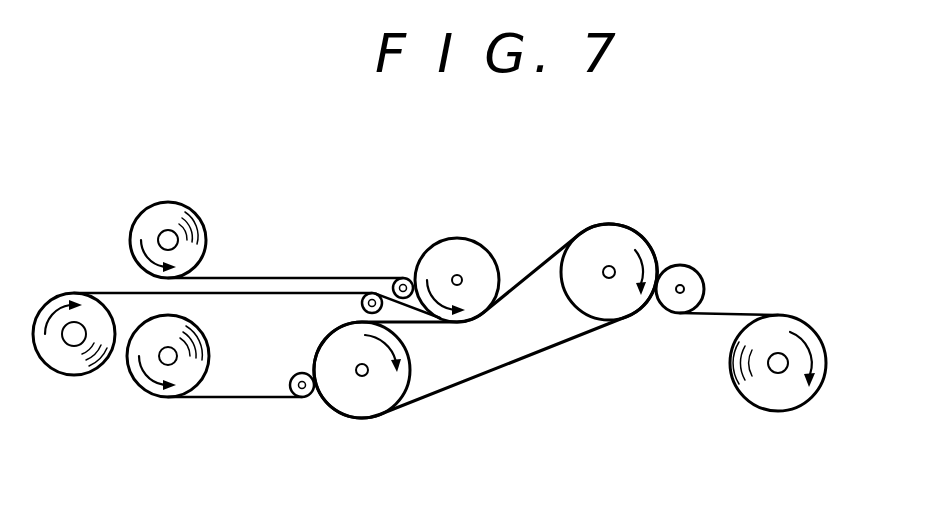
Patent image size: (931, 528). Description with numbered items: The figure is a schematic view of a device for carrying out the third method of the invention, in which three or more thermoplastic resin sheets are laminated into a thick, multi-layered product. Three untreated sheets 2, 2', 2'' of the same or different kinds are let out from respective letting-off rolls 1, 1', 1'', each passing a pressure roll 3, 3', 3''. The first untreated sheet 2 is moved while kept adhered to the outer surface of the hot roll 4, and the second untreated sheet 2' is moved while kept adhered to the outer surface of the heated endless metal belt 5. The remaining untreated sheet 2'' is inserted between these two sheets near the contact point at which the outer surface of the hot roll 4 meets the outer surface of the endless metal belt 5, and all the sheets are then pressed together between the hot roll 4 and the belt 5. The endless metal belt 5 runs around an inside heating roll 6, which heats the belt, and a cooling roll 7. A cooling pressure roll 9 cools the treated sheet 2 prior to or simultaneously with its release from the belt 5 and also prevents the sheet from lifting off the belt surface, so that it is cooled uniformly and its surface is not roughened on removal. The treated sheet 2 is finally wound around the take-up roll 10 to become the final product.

The letting-off roll 1 is at (186, 237).
The letting-off roll 1' is at (183, 350).
The letting-off roll 1'' is at (74, 309).
The untreated sheet 2 is at (285, 253).
The untreated sheet 2' is at (235, 372).
The untreated sheet 2'' is at (257, 315).
The pressure roll 3 is at (400, 263).
The pressure roll 3' is at (297, 413).
The pressure roll 3'' is at (353, 268).
The hot roll 4 is at (457, 280).
The endless metal belt 5 is at (565, 347).
The inside heating roll 6 is at (362, 370).
The cooling roll 7 is at (609, 272).
The cooling pressure roll 9 is at (687, 264).
The take-up roll 10 is at (788, 315).